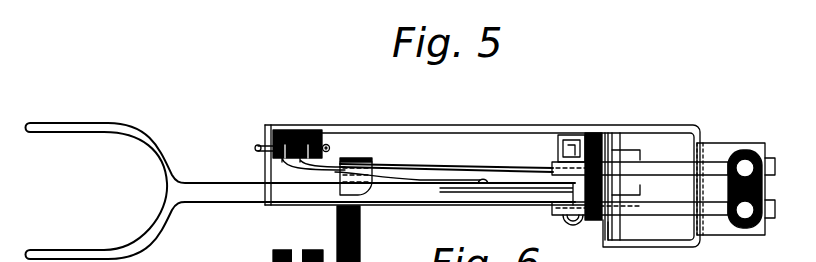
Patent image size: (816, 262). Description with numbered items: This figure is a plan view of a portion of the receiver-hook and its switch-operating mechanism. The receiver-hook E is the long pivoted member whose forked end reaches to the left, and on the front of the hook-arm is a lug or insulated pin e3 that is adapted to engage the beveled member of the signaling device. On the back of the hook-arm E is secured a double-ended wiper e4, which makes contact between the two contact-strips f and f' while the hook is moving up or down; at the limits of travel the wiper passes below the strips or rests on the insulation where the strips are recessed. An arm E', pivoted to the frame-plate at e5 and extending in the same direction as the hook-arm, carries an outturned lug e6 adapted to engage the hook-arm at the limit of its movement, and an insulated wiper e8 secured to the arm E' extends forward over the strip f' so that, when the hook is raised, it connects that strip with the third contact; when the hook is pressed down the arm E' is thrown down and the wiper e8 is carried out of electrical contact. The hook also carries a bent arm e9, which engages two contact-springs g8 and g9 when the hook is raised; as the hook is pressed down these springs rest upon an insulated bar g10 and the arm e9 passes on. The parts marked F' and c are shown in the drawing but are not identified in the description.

The receiver-hook E is at (313, 191).
The arm E' is at (446, 157).
The magnet F' is at (298, 125).
The contact-strip f is at (256, 133).
The contact-strip f' is at (341, 126).
The insulated wiper e8 is at (344, 160).
The outturned lug e6 is at (345, 190).
The lug or insulated pin e3 is at (361, 230).
The double-ended wiper e4 is at (442, 180).
The bent arm e9 is at (572, 190).
The pivot e5 is at (575, 134).
The casing c is at (628, 128).
The contact-spring g9 is at (708, 165).
The contact-spring g8 is at (688, 212).
The insulated bar g10 is at (592, 226).